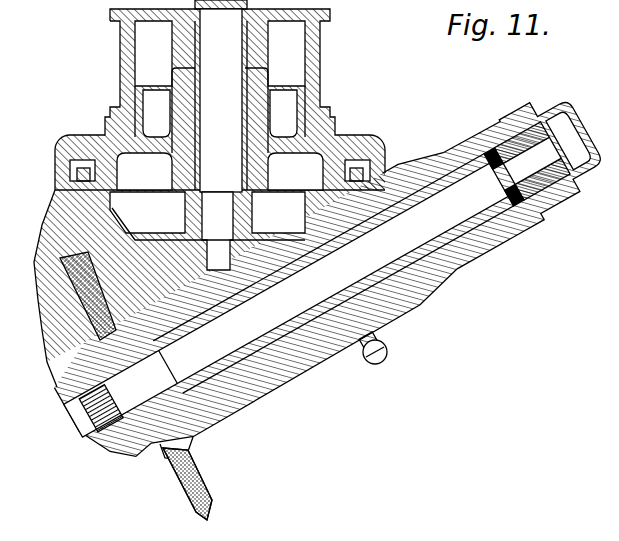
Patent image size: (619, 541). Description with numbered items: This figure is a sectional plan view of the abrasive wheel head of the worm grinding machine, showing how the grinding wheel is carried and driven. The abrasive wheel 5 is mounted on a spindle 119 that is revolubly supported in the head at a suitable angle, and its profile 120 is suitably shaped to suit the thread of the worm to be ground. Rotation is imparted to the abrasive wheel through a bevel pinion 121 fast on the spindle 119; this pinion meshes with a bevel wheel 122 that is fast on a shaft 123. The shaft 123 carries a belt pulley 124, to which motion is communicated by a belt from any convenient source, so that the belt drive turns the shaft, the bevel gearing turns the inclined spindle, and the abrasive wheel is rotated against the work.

The belt pulley 124 is at (318, 53).
The shaft 123 is at (221, 135).
The bevel wheel 122 is at (273, 234).
The bevel pinion 121 is at (350, 299).
The spindle 119 is at (114, 406).
The abrasive wheel 5 is at (197, 466).
The profile 120 is at (207, 508).